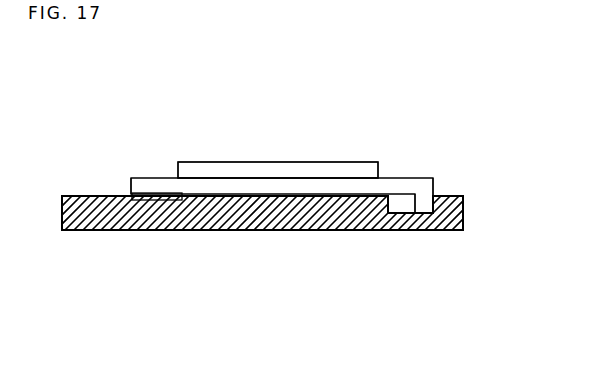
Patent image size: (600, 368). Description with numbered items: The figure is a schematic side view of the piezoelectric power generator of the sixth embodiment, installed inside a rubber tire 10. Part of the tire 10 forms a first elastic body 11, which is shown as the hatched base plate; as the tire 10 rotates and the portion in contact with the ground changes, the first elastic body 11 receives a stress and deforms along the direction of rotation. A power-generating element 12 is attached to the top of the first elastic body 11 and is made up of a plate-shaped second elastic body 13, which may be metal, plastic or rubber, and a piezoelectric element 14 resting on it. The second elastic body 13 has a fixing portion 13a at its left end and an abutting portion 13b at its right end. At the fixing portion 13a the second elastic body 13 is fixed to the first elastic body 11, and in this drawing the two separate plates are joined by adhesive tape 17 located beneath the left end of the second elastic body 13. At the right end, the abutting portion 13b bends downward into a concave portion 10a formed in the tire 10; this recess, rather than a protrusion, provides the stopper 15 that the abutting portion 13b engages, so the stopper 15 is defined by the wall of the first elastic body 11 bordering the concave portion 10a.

The tire 10 is at (253, 281).
The first elastic body 11 is at (283, 232).
The concave portion 10a is at (388, 196).
The power-generating element 12 is at (281, 141).
The second elastic body 13 is at (152, 177).
The fixing portion 13a is at (131, 180).
The abutting portion 13b is at (425, 187).
The piezoelectric element 14 is at (228, 162).
The stopper 15 is at (440, 196).
The adhesive tape 17 is at (157, 200).